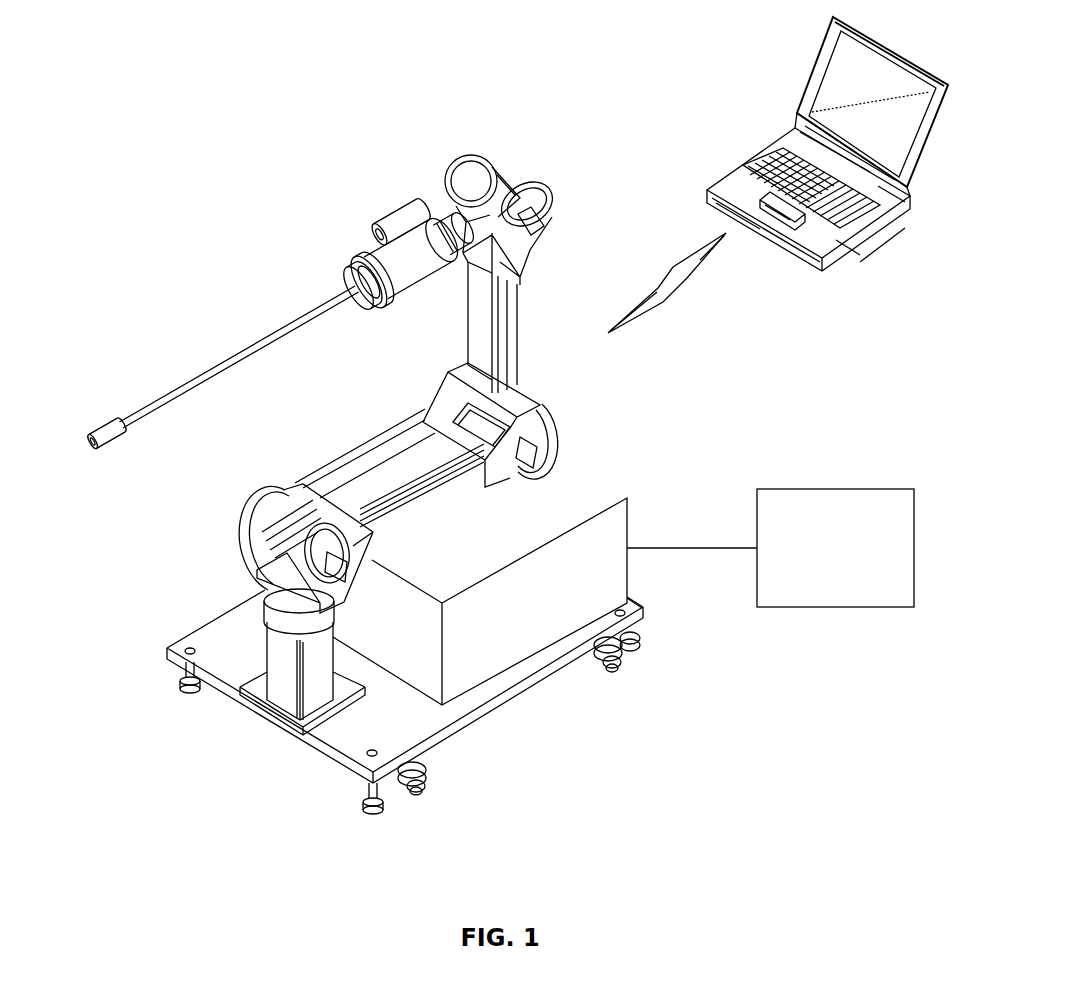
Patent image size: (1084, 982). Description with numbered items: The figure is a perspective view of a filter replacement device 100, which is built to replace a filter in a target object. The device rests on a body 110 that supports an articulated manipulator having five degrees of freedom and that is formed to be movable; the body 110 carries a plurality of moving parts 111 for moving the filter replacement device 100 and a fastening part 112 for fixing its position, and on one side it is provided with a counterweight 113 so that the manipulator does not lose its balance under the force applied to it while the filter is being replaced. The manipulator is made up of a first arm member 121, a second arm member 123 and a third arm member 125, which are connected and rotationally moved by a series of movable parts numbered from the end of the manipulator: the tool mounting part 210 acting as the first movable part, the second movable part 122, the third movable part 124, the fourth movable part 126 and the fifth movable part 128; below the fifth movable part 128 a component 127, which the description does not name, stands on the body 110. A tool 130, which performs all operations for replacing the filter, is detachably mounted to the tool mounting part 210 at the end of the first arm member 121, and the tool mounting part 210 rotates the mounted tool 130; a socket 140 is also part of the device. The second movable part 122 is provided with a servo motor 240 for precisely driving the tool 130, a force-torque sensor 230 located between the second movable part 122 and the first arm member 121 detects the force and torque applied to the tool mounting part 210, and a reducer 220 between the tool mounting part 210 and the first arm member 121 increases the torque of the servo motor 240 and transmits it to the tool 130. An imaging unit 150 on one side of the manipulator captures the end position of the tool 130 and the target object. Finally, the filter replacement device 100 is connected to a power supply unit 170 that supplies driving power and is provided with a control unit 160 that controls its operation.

The filter replacement device 100 is at (544, 108).
The body 110 is at (648, 621).
The moving parts 111 is at (427, 788).
The fastening part 112 is at (373, 818).
The counterweight 113 is at (604, 493).
The first arm member 121 is at (417, 265).
The second movable part 122 is at (550, 226).
The second arm member 123 is at (520, 334).
The third movable part 124 is at (540, 450).
The third arm member 125 is at (387, 473).
The fourth movable part 126 is at (275, 523).
The pedestal column 127 is at (285, 698).
The fifth movable part 128 is at (263, 613).
The tool 130 is at (240, 350).
The socket 140 is at (100, 428).
The imaging unit 150 is at (413, 205).
The control unit 160 is at (893, 46).
The power supply unit 170 is at (866, 487).
The tool mounting part 210 is at (352, 265).
The reducer 220 is at (383, 245).
The force-torque sensor 230 is at (444, 180).
The servo motor 240 is at (497, 196).